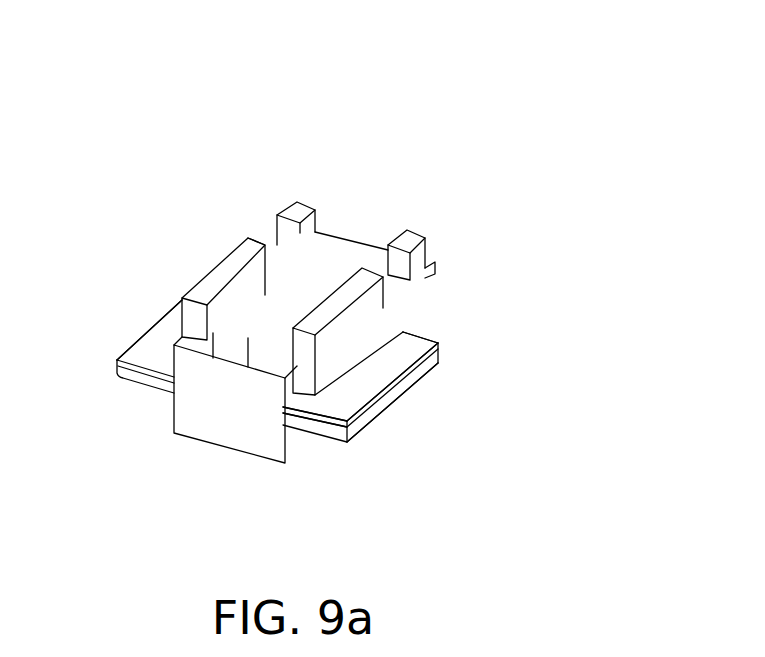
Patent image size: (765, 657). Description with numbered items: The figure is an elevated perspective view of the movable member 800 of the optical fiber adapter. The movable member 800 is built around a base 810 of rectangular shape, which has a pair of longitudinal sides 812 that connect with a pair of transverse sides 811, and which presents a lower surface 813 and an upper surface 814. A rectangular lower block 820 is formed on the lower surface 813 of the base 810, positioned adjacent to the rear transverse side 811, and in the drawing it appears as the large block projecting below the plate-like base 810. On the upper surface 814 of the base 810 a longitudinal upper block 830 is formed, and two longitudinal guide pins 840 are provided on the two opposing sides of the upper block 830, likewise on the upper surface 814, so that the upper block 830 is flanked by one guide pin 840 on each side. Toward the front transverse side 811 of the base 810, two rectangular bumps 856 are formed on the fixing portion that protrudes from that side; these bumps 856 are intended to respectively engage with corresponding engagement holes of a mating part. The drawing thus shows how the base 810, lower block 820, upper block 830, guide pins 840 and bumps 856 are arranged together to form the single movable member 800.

The movable member 800 is at (397, 94).
The base 810 is at (380, 373).
The transverse sides 811 is at (417, 332).
The longitudinal sides 812 is at (141, 337).
The lower surface 813 is at (430, 375).
The upper surface 814 is at (380, 412).
The lower block 820 is at (230, 418).
The upper block 830 is at (263, 278).
The guide pins 840 is at (215, 283).
The rectangular bumps 856 is at (296, 201).